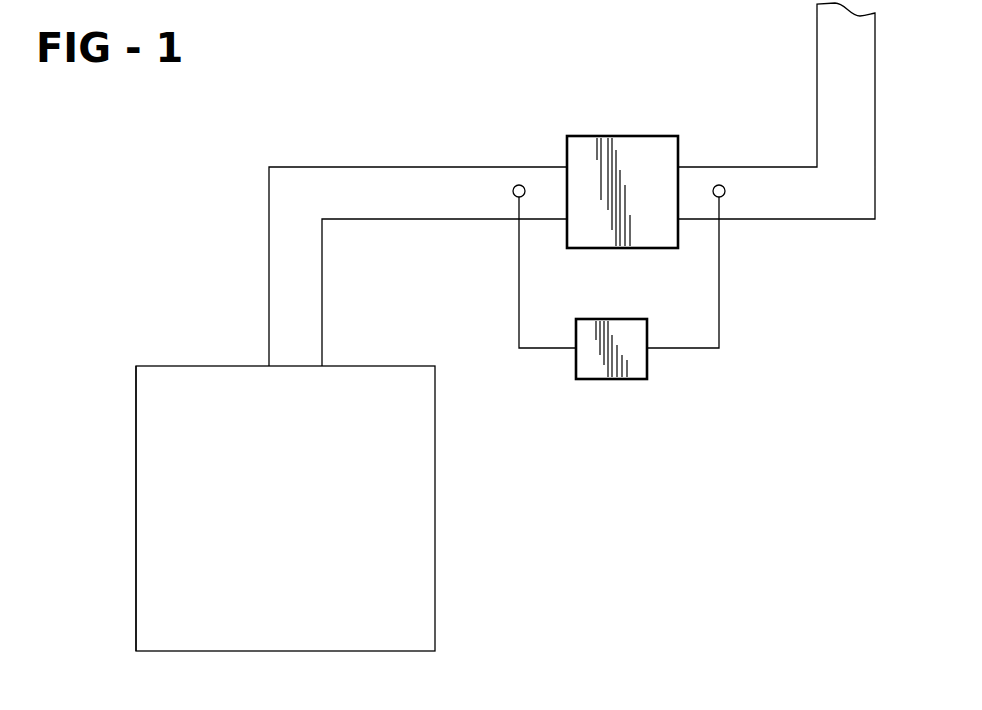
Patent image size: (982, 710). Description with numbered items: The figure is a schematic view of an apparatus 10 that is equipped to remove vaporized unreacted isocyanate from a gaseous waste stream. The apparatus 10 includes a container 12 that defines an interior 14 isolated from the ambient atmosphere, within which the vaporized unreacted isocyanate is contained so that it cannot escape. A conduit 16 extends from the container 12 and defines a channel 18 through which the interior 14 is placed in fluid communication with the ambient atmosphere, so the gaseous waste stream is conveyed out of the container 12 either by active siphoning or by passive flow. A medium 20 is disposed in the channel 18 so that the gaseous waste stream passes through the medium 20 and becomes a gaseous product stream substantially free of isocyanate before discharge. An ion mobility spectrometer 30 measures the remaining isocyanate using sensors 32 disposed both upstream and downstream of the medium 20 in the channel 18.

The apparatus 10 is at (281, 131).
The container 12 is at (436, 520).
The interior 14 is at (137, 503).
The conduit 16 is at (269, 257).
The channel 18 is at (322, 299).
The medium 20 is at (634, 128).
The ion mobility spectrometer 30 is at (603, 380).
The sensors 32 is at (519, 184).